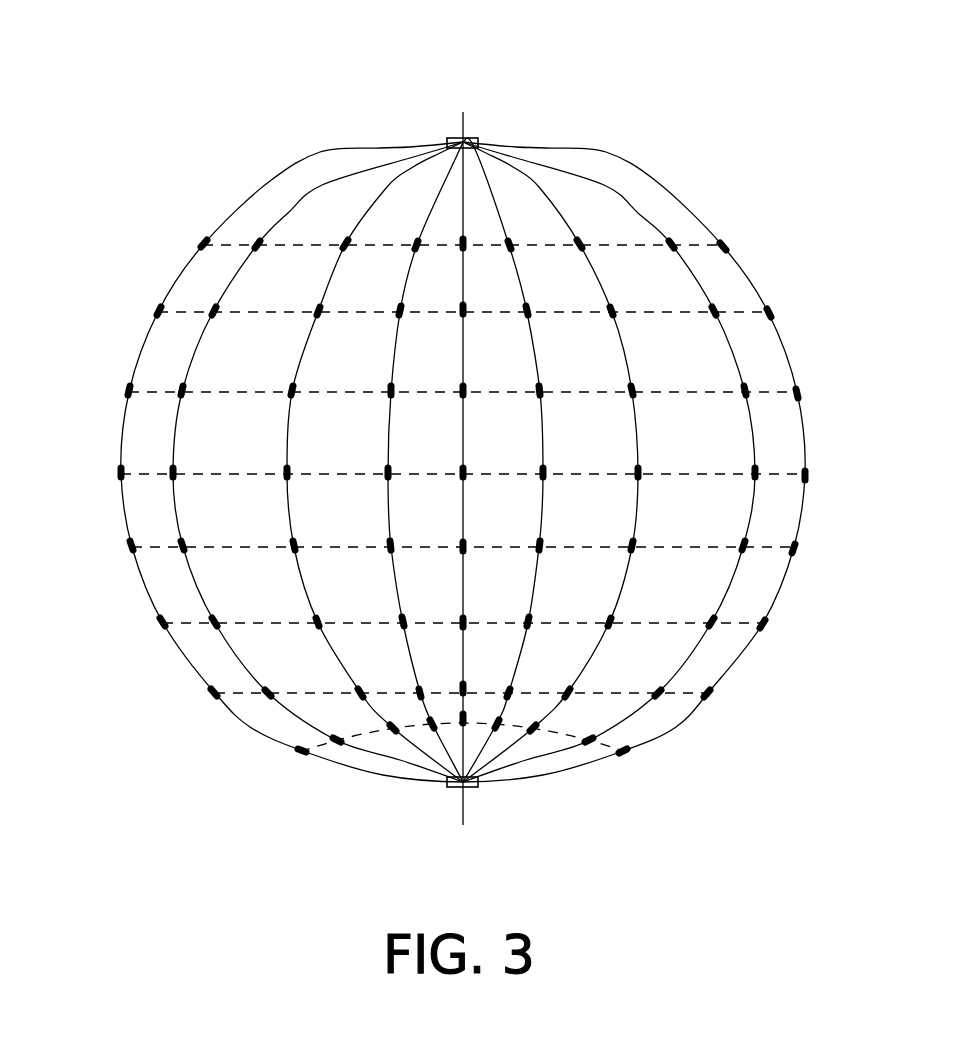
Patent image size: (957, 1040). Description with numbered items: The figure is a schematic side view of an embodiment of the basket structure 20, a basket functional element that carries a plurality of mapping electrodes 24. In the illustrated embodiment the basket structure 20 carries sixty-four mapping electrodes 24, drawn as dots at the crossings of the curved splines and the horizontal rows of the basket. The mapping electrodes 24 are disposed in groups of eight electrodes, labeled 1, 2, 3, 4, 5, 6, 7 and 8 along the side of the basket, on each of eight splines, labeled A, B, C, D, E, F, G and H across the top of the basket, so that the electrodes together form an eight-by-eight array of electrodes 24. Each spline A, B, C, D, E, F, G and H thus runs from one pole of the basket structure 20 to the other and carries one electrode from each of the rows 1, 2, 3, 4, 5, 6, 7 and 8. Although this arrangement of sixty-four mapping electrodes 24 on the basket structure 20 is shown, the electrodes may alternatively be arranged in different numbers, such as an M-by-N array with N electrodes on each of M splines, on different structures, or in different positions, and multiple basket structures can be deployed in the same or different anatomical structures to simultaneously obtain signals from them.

The basket structure 20 is at (192, 108).
The mapping electrodes 24 is at (772, 312).
The electrode label 1 is at (198, 240).
The electrode label 2 is at (152, 310).
The electrode label 3 is at (128, 390).
The electrode label 4 is at (119, 472).
The electrode label 5 is at (130, 549).
The electrode label 6 is at (165, 623).
The electrode label 7 is at (213, 694).
The electrode label 8 is at (300, 753).
The spline A is at (488, 160).
The spline B is at (520, 175).
The spline C is at (606, 185).
The spline D is at (700, 215).
The spline E is at (441, 140).
The spline F is at (406, 143).
The spline G is at (297, 205).
The spline H is at (357, 228).